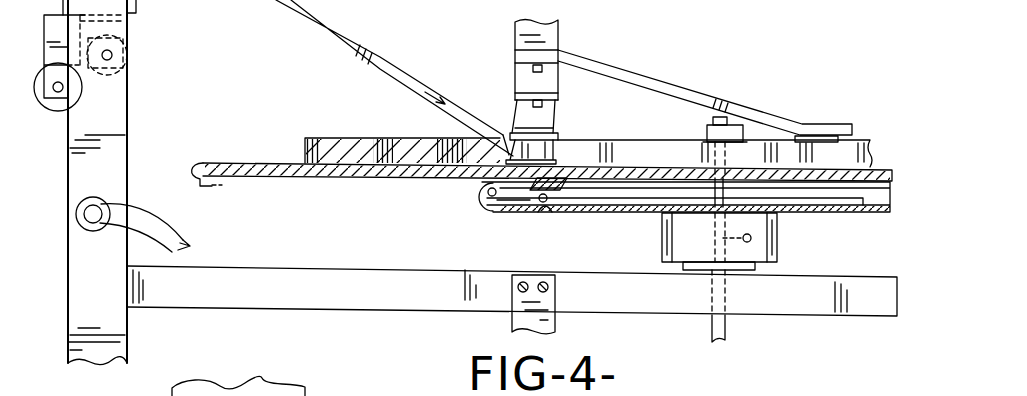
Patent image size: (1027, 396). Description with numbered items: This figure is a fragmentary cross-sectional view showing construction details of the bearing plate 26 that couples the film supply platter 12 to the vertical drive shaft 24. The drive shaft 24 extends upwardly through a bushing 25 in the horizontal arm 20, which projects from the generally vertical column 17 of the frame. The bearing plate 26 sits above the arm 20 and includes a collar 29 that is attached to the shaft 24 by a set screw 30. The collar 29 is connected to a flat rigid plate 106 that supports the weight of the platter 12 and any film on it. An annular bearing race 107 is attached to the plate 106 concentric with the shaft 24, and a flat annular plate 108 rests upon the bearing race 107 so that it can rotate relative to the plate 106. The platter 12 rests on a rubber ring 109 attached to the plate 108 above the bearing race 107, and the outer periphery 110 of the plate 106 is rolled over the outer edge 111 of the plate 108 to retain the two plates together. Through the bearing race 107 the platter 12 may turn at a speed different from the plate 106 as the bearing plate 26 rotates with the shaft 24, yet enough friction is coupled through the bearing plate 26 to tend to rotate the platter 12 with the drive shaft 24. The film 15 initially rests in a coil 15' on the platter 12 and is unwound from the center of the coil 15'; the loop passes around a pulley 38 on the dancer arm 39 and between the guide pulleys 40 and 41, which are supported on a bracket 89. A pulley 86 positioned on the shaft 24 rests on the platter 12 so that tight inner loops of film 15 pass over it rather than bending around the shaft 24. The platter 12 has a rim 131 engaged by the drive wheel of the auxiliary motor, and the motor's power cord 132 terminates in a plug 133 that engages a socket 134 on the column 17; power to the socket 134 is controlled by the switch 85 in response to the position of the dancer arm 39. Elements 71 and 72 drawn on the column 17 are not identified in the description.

The film 15 is at (361, 78).
The coil 15' is at (402, 127).
The upper pulley 72 is at (118, 78).
The lower pulley 71 is at (45, 108).
The platter 12 is at (200, 163).
The plug 133 is at (95, 197).
The socket 134 is at (82, 212).
The column 17 is at (72, 248).
The rim 131 is at (195, 186).
The power cord 132 is at (190, 246).
The arm 20 is at (165, 308).
The guide pulley 40 is at (505, 132).
The switch 85 is at (560, 33).
The bracket 89 is at (573, 100).
The dancer arm 39 is at (632, 72).
The guide pulley 41 is at (557, 150).
The pulley 86 is at (703, 140).
The pulley 38 is at (828, 152).
The outer edge 111 is at (487, 190).
The outer periphery 110 is at (488, 198).
The flat annular plate 108 is at (492, 210).
The annular bearing race 107 is at (540, 205).
The bearing plate 26 is at (549, 223).
The rubber ring 109 is at (557, 190).
The flat rigid plate 106 is at (832, 213).
The set screw 30 is at (752, 238).
The collar 29 is at (662, 258).
The bushing 25 is at (745, 272).
The drive shaft 24 is at (725, 330).